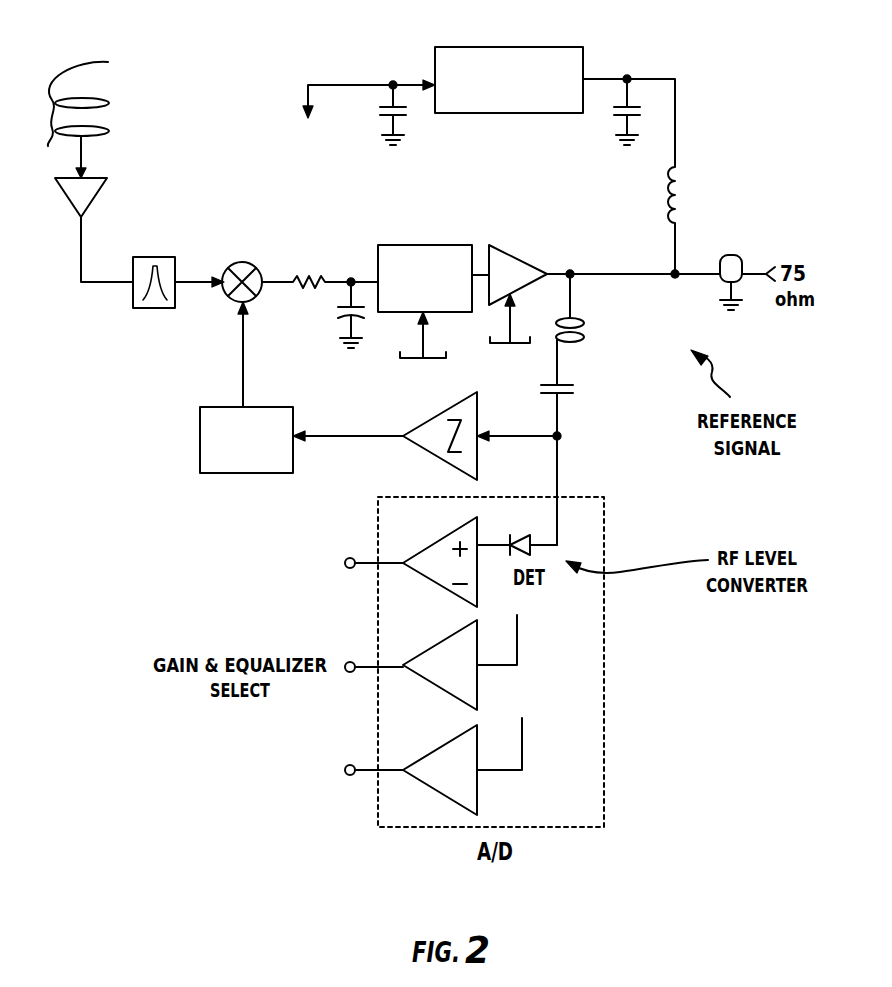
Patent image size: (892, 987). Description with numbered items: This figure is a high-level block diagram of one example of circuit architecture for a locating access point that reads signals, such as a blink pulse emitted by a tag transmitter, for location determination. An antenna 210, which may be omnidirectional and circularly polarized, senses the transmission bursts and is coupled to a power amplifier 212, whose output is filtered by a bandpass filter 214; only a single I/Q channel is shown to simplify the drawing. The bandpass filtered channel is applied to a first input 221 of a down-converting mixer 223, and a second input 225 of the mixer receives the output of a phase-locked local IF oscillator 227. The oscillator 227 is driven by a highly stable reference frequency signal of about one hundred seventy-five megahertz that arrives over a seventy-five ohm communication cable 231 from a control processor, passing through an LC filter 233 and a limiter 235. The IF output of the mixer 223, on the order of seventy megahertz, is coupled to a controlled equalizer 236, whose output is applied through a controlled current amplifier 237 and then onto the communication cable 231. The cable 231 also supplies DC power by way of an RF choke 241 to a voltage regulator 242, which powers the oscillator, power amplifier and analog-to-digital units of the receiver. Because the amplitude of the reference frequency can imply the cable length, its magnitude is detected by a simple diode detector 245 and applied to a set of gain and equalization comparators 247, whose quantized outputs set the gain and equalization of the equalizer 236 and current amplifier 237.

The antenna 210 is at (108, 90).
The power amplifier 212 is at (62, 196).
The bandpass filter 214 is at (150, 308).
The first input 221 is at (226, 269).
The down-converting mixer 223 is at (242, 262).
The second input 225 is at (230, 300).
The phase-locked local IF oscillator 227 is at (200, 452).
The communication cable 231 is at (623, 272).
The LC filter 233 is at (582, 322).
The limiter 235 is at (430, 420).
The controlled equalizer 236 is at (430, 245).
The controlled current amplifier 237 is at (525, 263).
The RF choke 241 is at (668, 188).
The voltage regulator 242 is at (565, 47).
The diode detector 245 is at (528, 535).
The gain and equalization comparators 247 is at (538, 740).